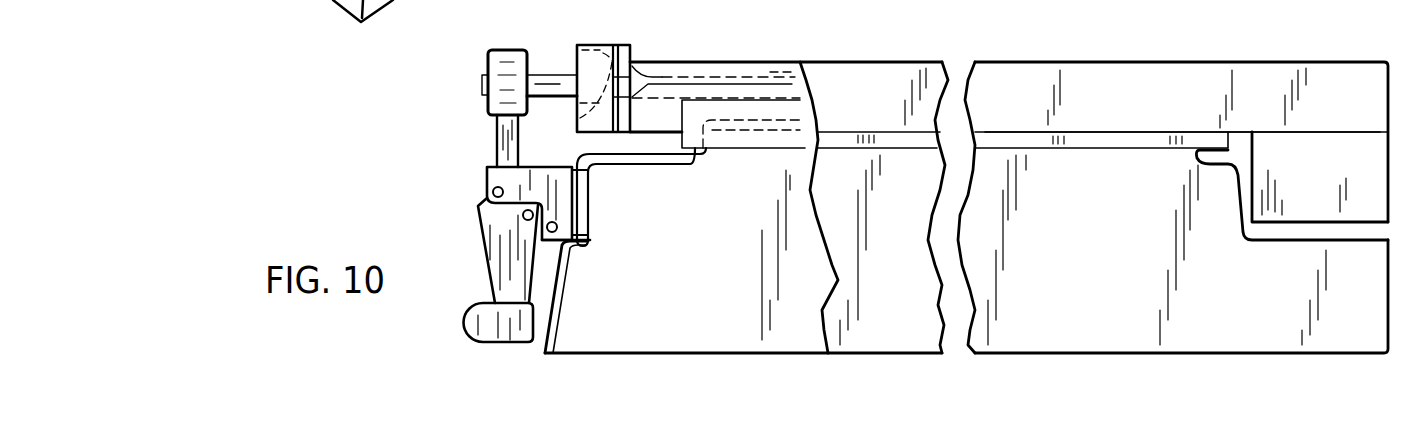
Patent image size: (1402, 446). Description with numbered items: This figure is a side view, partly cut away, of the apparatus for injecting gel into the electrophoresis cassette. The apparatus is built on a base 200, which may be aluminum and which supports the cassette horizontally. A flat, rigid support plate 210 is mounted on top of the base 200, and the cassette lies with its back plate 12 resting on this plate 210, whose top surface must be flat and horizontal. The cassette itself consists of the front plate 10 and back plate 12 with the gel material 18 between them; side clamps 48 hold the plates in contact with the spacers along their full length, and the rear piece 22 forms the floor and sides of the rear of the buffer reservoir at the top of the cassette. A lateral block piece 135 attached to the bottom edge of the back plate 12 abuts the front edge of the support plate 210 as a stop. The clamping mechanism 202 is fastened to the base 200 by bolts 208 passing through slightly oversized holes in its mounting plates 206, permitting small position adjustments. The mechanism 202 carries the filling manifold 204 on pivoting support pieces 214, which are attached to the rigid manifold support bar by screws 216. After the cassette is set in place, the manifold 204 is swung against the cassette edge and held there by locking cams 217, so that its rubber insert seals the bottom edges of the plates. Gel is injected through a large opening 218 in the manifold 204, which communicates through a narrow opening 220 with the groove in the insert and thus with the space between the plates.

The front plate 10 is at (698, 62).
The back plate 12 is at (735, 90).
The gel material 18 is at (772, 72).
The rear piece 22 is at (1328, 170).
The side clamps 48 is at (1143, 112).
The lateral block piece 135 is at (656, 124).
The base 200 is at (560, 278).
The clamping mechanism 202 is at (432, 222).
The filling manifold 204 is at (618, 45).
The mounting plates 206 is at (590, 237).
The bolts 208 is at (590, 222).
The support plate 210 is at (800, 109).
The pivoting support pieces 214 is at (490, 108).
The screws 216 is at (488, 85).
The locking cams 217 is at (507, 260).
The large opening 218 is at (575, 62).
The narrow opening 220 is at (592, 112).